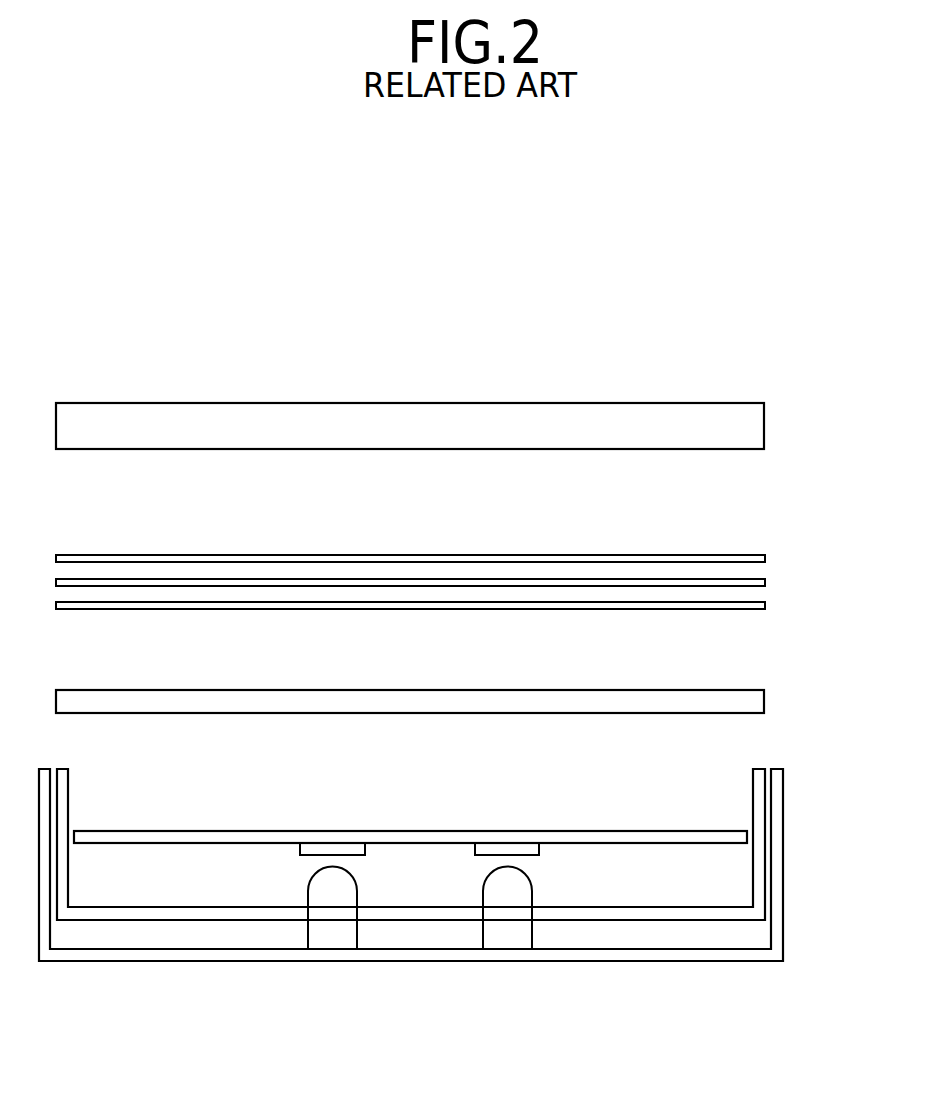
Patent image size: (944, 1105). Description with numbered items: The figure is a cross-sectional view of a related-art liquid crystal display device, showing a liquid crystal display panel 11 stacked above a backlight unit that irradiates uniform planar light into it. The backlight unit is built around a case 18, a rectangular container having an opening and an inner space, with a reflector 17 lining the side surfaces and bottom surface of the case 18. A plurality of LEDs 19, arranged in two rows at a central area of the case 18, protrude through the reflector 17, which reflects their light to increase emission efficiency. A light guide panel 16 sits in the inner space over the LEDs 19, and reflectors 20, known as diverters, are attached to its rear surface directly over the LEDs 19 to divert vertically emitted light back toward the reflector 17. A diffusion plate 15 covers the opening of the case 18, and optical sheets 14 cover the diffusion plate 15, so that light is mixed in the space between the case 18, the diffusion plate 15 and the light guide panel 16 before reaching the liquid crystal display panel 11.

The liquid crystal display panel 11 is at (746, 416).
The optical sheets 14 is at (777, 552).
The diffusion plate 15 is at (752, 704).
The light guide panel 16 is at (667, 838).
The reflector 17 is at (758, 818).
The case 18 is at (777, 891).
The LEDs 19 is at (508, 900).
The reflectors 20 is at (485, 847).